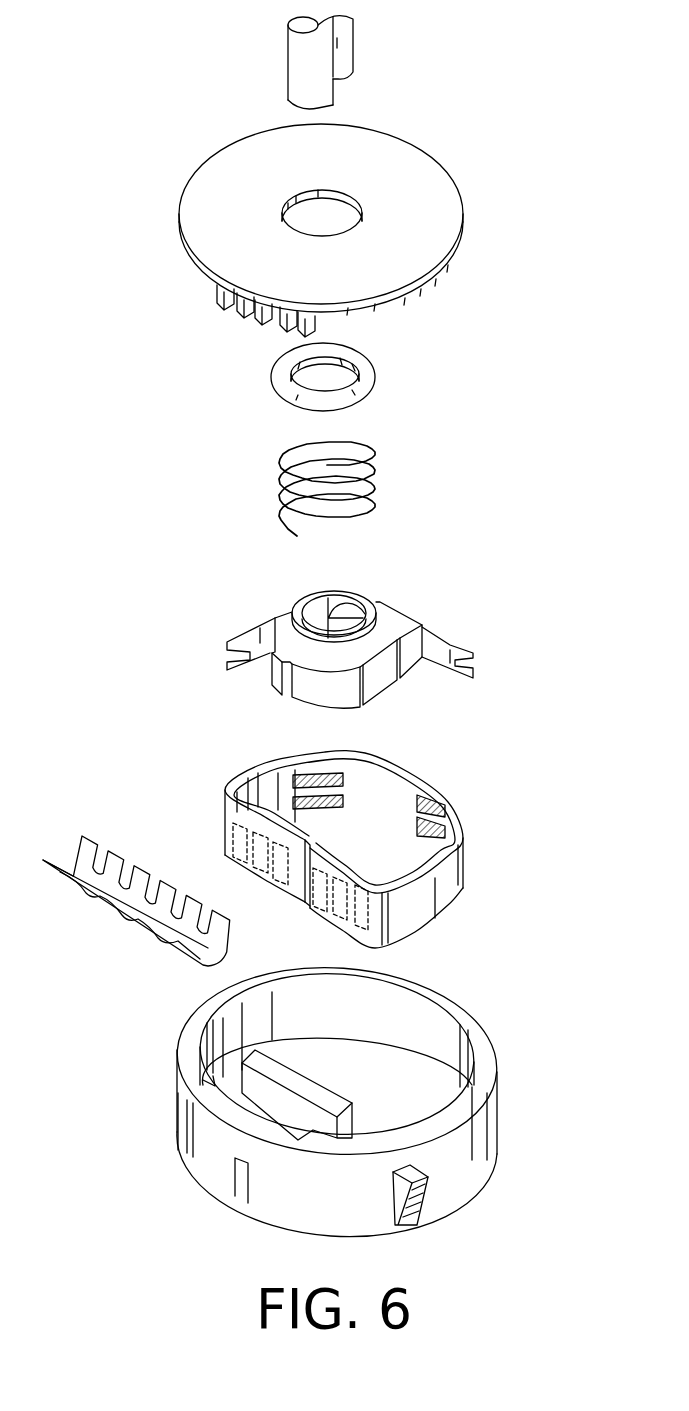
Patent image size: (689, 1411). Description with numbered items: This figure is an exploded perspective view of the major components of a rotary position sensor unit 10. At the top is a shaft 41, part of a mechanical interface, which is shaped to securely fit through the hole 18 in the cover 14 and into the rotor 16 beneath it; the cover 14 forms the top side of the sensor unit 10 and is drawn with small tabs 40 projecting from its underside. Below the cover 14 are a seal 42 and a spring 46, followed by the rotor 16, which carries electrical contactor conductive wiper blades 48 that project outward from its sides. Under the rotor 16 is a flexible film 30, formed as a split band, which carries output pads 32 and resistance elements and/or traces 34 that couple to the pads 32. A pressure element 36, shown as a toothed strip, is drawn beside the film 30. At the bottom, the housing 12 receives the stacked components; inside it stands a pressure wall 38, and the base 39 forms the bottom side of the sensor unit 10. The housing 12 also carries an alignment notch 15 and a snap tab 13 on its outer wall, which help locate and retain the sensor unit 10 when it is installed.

The sensor unit 10 is at (137, 478).
The housing 12 is at (349, 1097).
The snap tab 13 is at (418, 1194).
The cover 14 is at (437, 217).
The alignment notch 15 is at (239, 1198).
The rotor 16 is at (390, 625).
The hole 18 is at (337, 218).
The flexible film 30 is at (448, 902).
The output pads 32 is at (227, 838).
The resistance elements and/or traces 34 is at (333, 770).
The pressure element 36 is at (127, 913).
The pressure wall 38 is at (252, 1090).
The base 39 is at (425, 1092).
The tabs 40 is at (260, 323).
The shaft 41 is at (343, 50).
The seal 42 is at (370, 370).
The spring 46 is at (363, 437).
The electrical contactor conductive wiper blades 48 is at (440, 637).